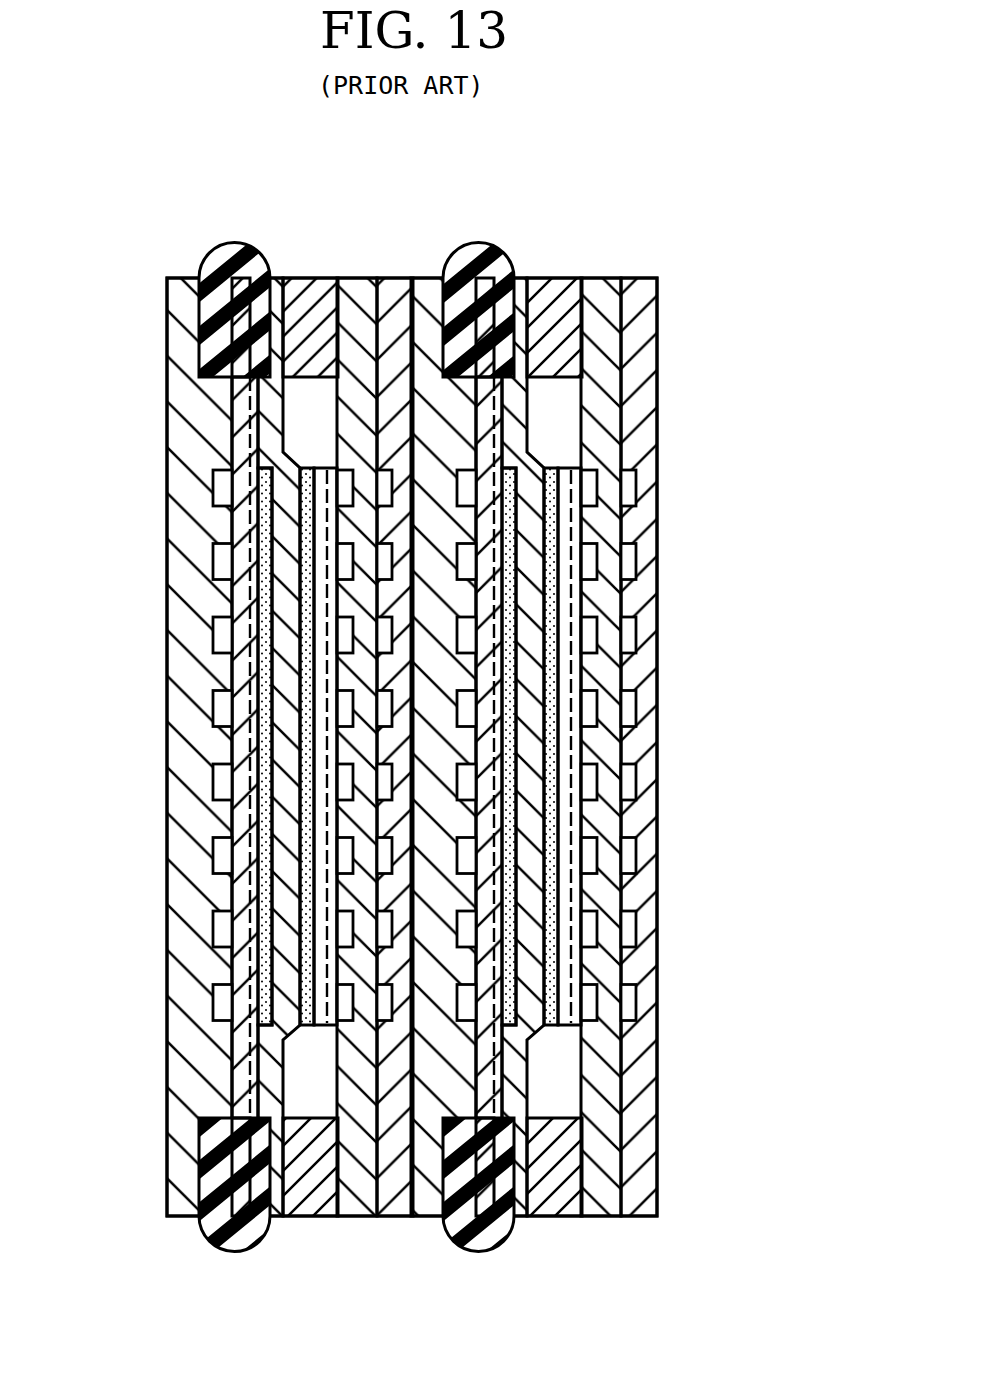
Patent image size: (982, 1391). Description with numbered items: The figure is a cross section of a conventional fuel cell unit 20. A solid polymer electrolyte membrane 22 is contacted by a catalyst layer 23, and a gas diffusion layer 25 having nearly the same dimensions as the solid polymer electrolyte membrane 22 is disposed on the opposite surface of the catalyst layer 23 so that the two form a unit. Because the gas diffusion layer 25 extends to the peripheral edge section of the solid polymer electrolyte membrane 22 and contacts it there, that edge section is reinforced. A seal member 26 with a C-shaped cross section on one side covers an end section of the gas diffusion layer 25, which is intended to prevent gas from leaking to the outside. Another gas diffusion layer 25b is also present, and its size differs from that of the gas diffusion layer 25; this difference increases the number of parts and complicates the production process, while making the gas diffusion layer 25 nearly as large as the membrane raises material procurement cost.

The fuel cell unit 20 is at (703, 415).
The solid polymer electrolyte membrane 22 is at (260, 404).
The catalyst layer 23 is at (265, 672).
The gas diffusion layer 25 is at (242, 448).
The another gas diffusion layer 25b is at (330, 608).
The seal member 26 is at (243, 265).